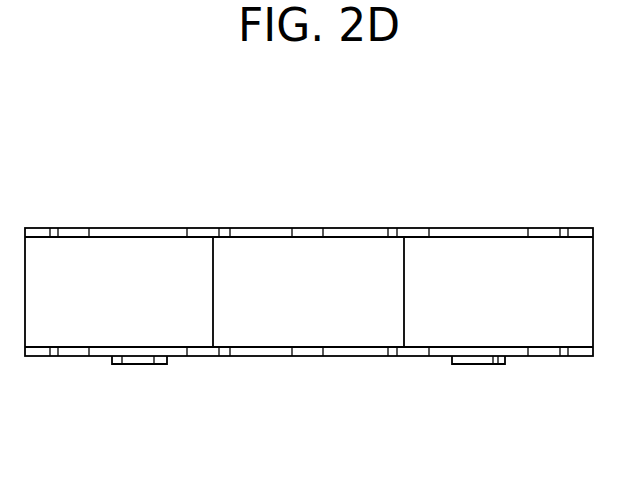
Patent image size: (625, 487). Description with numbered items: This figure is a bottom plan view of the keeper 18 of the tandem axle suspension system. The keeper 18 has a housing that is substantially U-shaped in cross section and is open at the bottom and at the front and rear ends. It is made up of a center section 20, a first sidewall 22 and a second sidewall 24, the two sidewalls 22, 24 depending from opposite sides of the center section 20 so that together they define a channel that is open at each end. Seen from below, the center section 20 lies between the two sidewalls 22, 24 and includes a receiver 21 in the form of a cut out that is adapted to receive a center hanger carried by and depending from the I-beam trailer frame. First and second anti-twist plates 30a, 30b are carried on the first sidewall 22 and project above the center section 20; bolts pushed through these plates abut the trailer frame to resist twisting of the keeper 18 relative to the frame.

The keeper 18 is at (497, 168).
The center section 20 is at (131, 305).
The receiver 21 is at (331, 275).
The first sidewall 22 is at (275, 356).
The second sidewall 24 is at (249, 229).
The first anti-twist plate 30a is at (487, 364).
The second anti-twist plate 30b is at (134, 364).